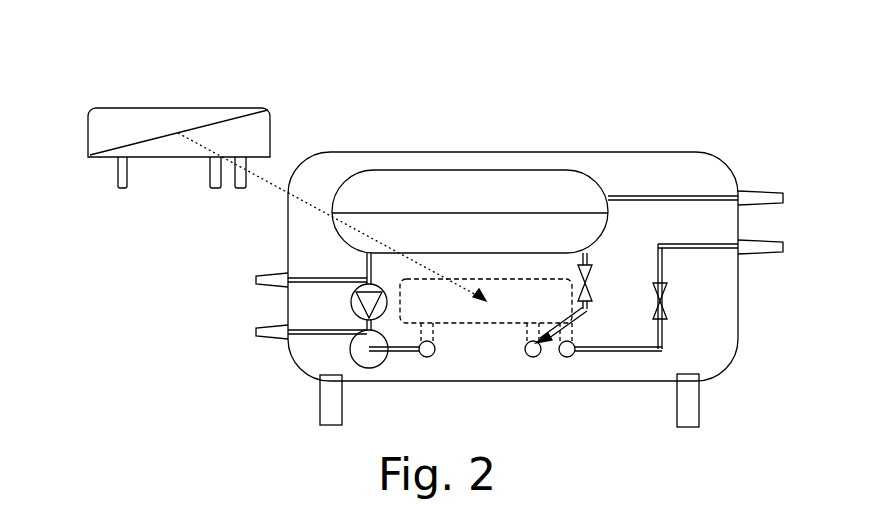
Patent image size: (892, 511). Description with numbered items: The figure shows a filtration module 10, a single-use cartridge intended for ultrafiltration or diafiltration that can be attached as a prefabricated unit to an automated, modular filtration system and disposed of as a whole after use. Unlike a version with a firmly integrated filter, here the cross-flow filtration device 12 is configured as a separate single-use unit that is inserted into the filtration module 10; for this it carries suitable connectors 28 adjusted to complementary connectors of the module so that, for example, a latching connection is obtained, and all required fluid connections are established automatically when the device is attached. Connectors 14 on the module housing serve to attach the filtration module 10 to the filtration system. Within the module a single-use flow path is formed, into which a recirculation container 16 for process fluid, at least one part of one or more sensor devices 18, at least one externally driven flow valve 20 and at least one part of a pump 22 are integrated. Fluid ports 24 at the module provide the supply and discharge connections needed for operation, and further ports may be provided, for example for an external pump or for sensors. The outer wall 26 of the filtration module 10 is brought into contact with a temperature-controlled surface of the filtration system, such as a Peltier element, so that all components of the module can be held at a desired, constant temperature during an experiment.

The filtration module 10 is at (666, 120).
The cross-flow filtration device 12 is at (228, 108).
The connectors 14 is at (700, 400).
The recirculation container 16 is at (528, 198).
The sensor devices 18 is at (352, 356).
The flow valve 20 is at (608, 305).
The pump 22 is at (352, 296).
The fluid ports 24 is at (760, 196).
The outer wall 26 is at (382, 151).
The connectors 28 is at (120, 168).